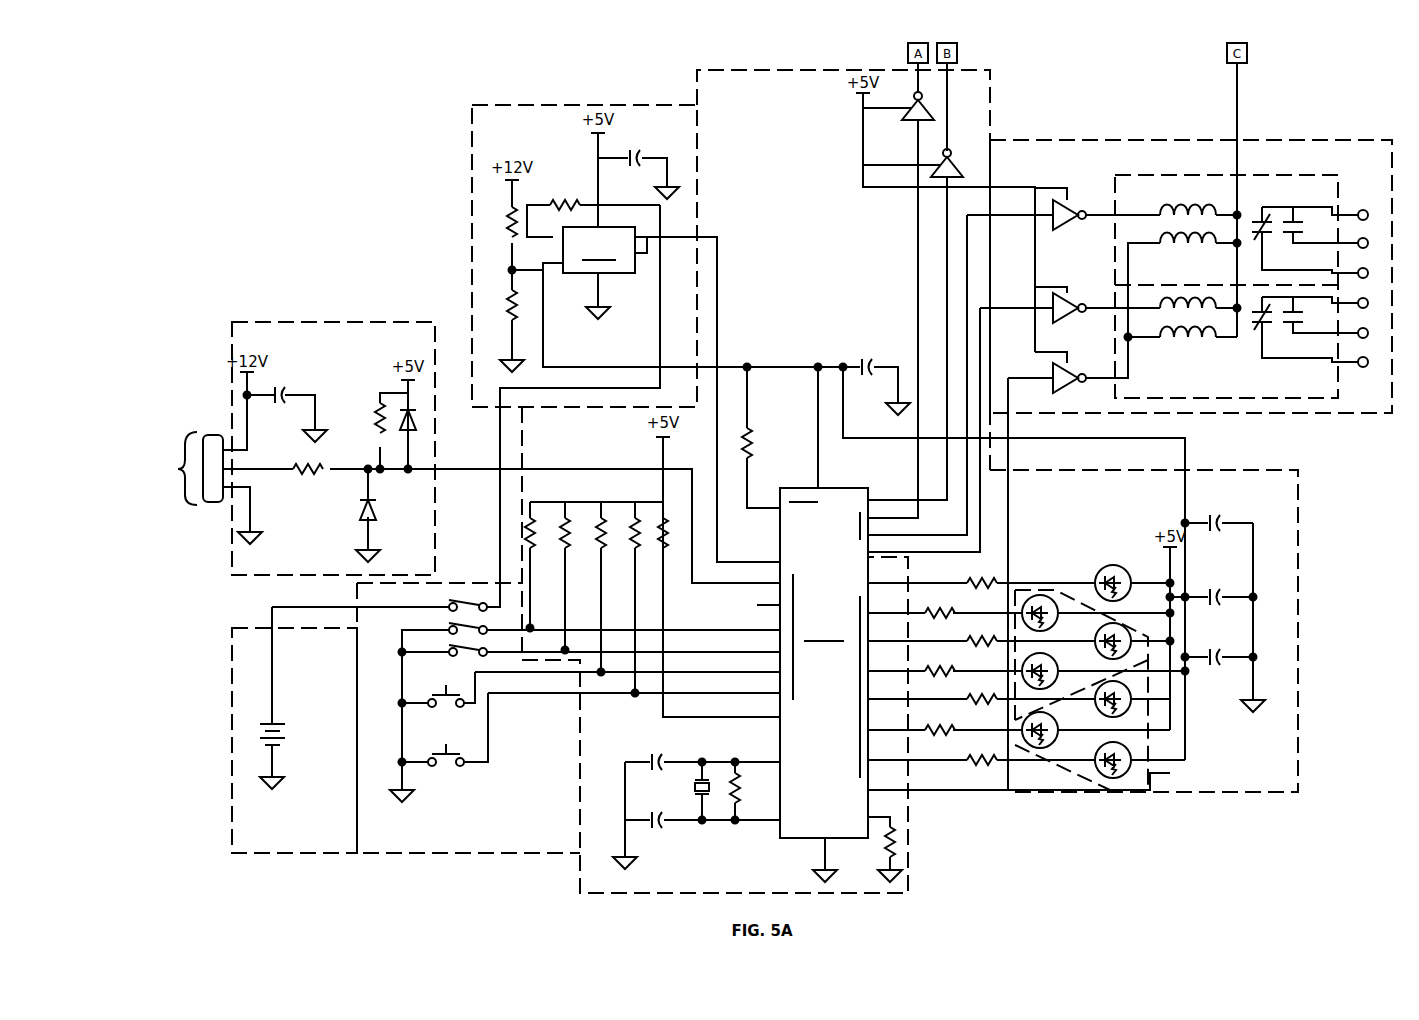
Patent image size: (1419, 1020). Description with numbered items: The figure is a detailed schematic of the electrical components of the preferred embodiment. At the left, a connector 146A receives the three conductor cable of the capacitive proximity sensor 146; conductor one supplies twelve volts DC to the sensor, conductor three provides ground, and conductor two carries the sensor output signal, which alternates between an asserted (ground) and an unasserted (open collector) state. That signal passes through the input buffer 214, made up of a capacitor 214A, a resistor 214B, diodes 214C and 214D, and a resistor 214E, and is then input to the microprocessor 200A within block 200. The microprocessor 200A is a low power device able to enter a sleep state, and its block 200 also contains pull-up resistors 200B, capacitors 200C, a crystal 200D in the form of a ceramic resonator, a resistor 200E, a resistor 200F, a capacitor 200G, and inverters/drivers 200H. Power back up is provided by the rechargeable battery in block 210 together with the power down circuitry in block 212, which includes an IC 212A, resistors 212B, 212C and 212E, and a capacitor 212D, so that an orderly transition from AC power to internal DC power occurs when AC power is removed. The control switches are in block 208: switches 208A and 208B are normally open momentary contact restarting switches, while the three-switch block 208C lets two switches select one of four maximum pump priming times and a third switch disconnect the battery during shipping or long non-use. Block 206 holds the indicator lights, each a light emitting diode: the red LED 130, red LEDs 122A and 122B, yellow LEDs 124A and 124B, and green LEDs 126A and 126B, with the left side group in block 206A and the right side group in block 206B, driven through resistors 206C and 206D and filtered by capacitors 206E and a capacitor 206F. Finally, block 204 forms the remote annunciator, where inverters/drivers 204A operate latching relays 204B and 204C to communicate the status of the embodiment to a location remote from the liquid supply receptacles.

The capacitive proximity sensor 146 is at (128, 468).
The connector 146A is at (213, 505).
The microprocessor block 200 is at (917, 831).
The microprocessor 200A is at (824, 674).
The resistors 200B is at (530, 497).
The capacitors 200C is at (667, 768).
The crystal 200D is at (706, 780).
The resistor 200E is at (733, 805).
The resistor 200F is at (755, 432).
The capacitor 200G is at (868, 352).
The inverters/drivers 200H is at (963, 168).
The remote annunciator block 204 is at (1290, 137).
The inverters/drivers 204A is at (1072, 205).
The latching relay 204B is at (1310, 175).
The latching relay 204C is at (1338, 318).
The indicator light block 206 is at (1302, 616).
The left side LED block 206A is at (1170, 773).
The right side LED block 206B is at (1025, 590).
The resistors 206C is at (975, 639).
The resistors 206D is at (975, 580).
The capacitors 206E is at (1222, 518).
The capacitor 206F is at (1224, 595).
The switch block 208 is at (443, 860).
The switch 208A is at (452, 770).
The switch 208B is at (450, 708).
The DIP switch 208C is at (487, 660).
The battery block 210 is at (230, 689).
The power down circuitry block 212 is at (583, 102).
The IC 212A is at (597, 251).
The resistor 212B is at (508, 232).
The resistor 212C is at (555, 205).
The capacitor 212D is at (640, 155).
The resistor 212E is at (505, 305).
The input buffer 214 is at (333, 320).
The capacitor 214A is at (283, 395).
The resistor 214B is at (310, 473).
The diode 214C is at (378, 505).
The diode 214D is at (420, 420).
The resistor 214E is at (376, 420).
The LED 122A is at (1131, 710).
The LED 122B is at (1058, 618).
The LED 124A is at (1058, 738).
The LED 124B is at (1096, 648).
The LED 126A is at (1130, 778).
The LED 126B is at (1022, 682).
The LED 130 is at (1113, 566).